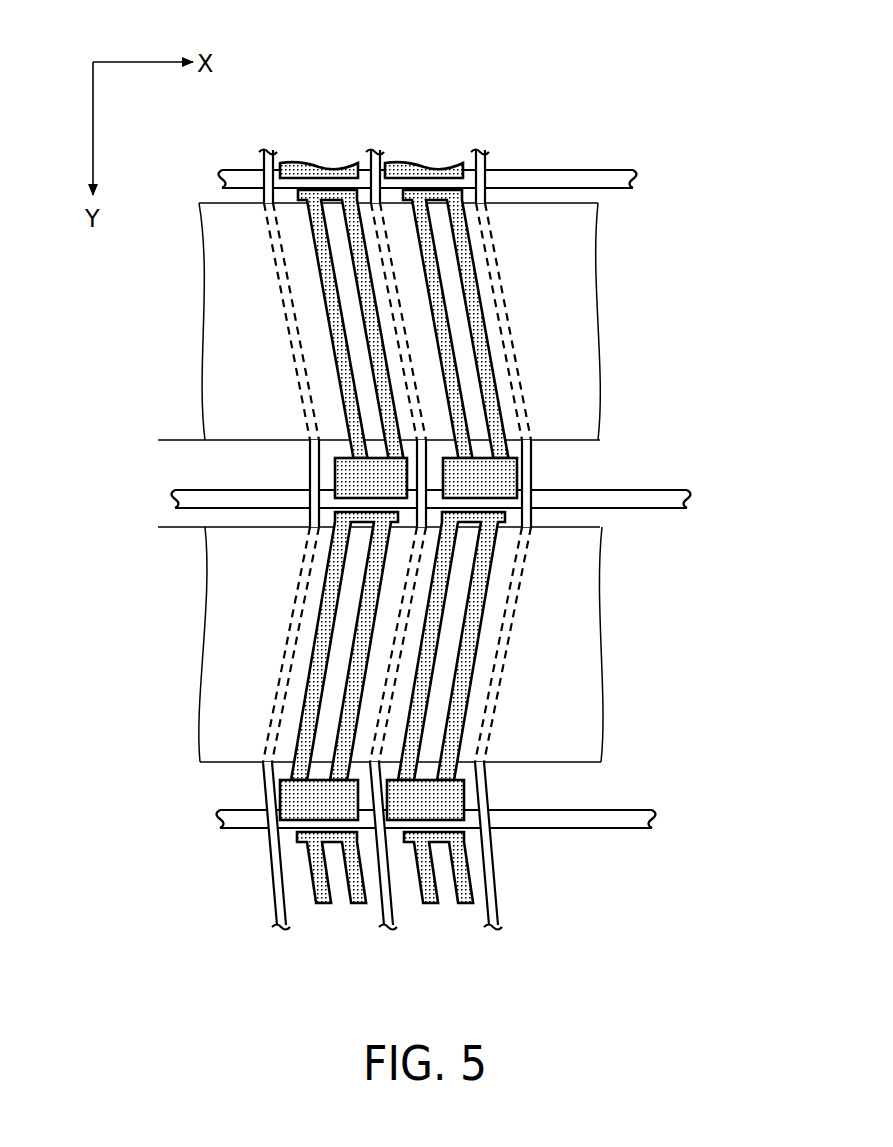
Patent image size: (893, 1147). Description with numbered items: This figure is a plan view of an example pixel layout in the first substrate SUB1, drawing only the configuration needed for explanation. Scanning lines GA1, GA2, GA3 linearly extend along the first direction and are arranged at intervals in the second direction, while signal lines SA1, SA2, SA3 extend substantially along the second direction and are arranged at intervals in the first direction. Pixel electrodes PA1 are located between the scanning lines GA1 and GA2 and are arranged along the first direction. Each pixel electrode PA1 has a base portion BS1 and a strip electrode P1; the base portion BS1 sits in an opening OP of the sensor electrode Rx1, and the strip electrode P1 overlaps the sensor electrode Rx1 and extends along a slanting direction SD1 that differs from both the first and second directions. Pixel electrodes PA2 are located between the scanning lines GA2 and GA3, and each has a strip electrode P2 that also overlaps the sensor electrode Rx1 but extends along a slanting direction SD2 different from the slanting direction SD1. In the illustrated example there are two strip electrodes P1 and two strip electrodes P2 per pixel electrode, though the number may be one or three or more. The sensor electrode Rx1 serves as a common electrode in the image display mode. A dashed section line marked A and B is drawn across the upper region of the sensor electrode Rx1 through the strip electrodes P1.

The first substrate SUB1 is at (671, 114).
The scanning line GA1 is at (633, 179).
The scanning line GA2 is at (687, 499).
The scanning line GA3 is at (652, 819).
The signal line SA1 is at (282, 930).
The signal line SA2 is at (389, 930).
The signal line SA3 is at (494, 930).
The pixel electrode PA1 is at (333, 189).
The pixel electrode PA2 is at (292, 808).
The strip electrode P1 is at (357, 295).
The strip electrode P2 is at (345, 673).
The base portion BS1 is at (335, 472).
The sensor electrode Rx1 is at (593, 308).
The opening OP is at (151, 440).
The section line end A is at (423, 380).
The section line end B is at (430, 379).
The slanting direction SD1 is at (93, 62).
The slanting direction SD2 is at (93, 62).